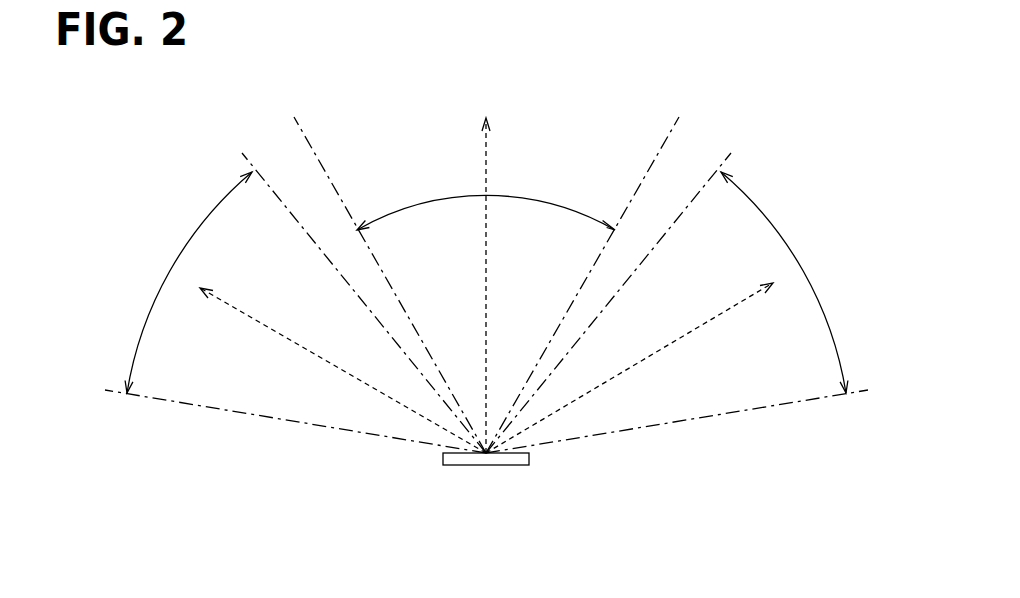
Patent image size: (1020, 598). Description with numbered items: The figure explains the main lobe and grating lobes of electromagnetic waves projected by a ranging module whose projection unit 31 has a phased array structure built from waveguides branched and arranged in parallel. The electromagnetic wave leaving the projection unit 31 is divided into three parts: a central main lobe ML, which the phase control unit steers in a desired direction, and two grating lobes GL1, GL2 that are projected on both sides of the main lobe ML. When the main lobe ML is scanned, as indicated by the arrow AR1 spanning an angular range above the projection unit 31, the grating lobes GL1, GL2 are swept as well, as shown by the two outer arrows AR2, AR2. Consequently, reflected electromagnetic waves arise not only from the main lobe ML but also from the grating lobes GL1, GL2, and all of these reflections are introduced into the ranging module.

The projection unit 31 is at (489, 468).
The main lobe ML is at (490, 165).
The grating lobe GL1 is at (302, 350).
The grating lobe GL2 is at (668, 347).
The arrow AR1 is at (550, 198).
The arrow AR2 is at (188, 237).